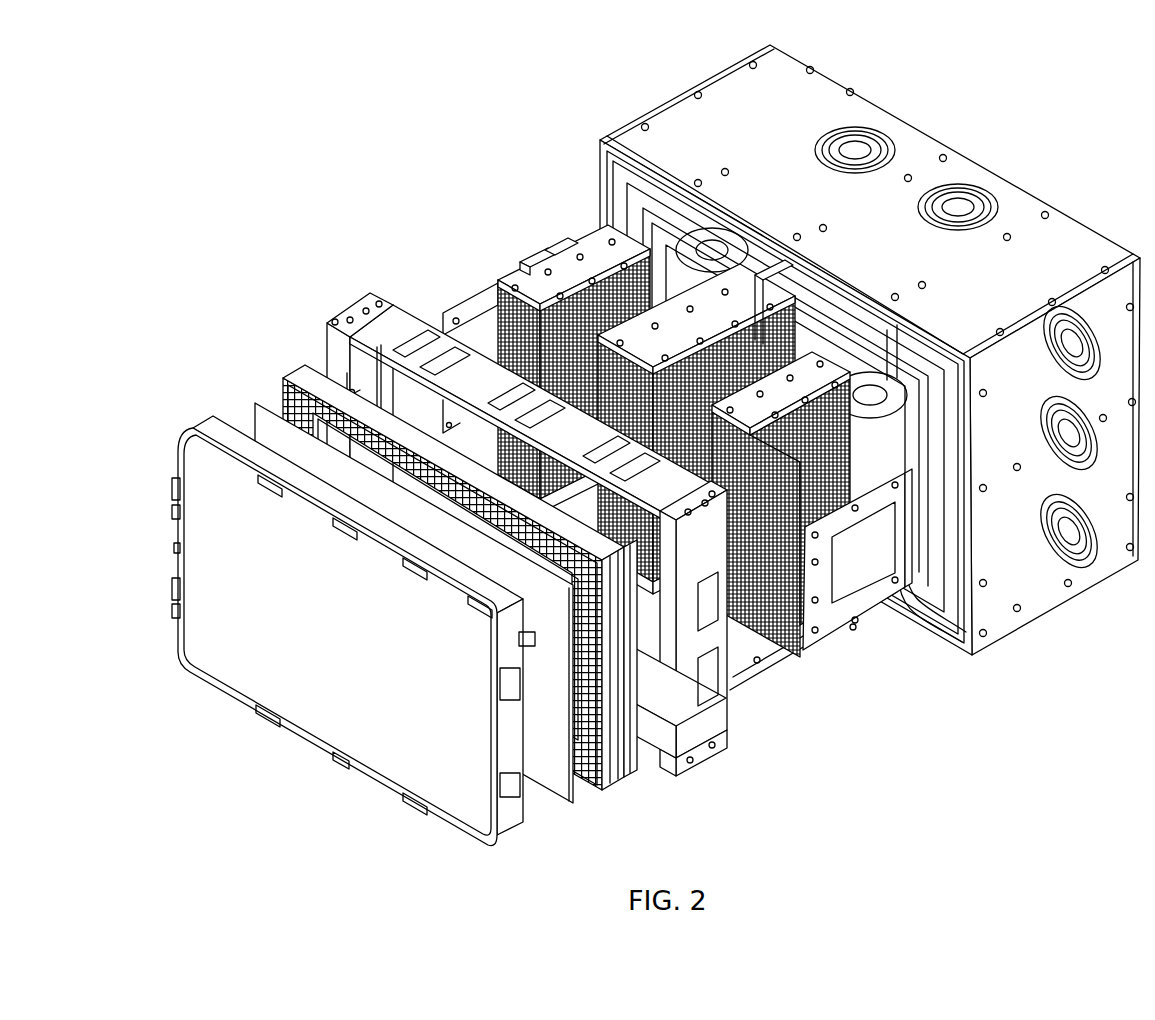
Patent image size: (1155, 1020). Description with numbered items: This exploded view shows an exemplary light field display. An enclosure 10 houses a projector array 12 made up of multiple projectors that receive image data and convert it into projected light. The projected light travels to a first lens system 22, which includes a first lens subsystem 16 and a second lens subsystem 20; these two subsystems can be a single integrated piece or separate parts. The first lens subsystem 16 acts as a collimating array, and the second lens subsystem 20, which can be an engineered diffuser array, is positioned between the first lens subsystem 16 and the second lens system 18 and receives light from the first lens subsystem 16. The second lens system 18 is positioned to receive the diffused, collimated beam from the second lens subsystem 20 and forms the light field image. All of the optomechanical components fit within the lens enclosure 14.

The enclosure 10 is at (677, 97).
The projector array 12 is at (507, 262).
The lens enclosure 14 is at (357, 305).
The first lens subsystem 16 is at (282, 383).
The second lens system 18 is at (180, 443).
The second lens subsystem 20 is at (295, 453).
The first lens system 22 is at (197, 328).